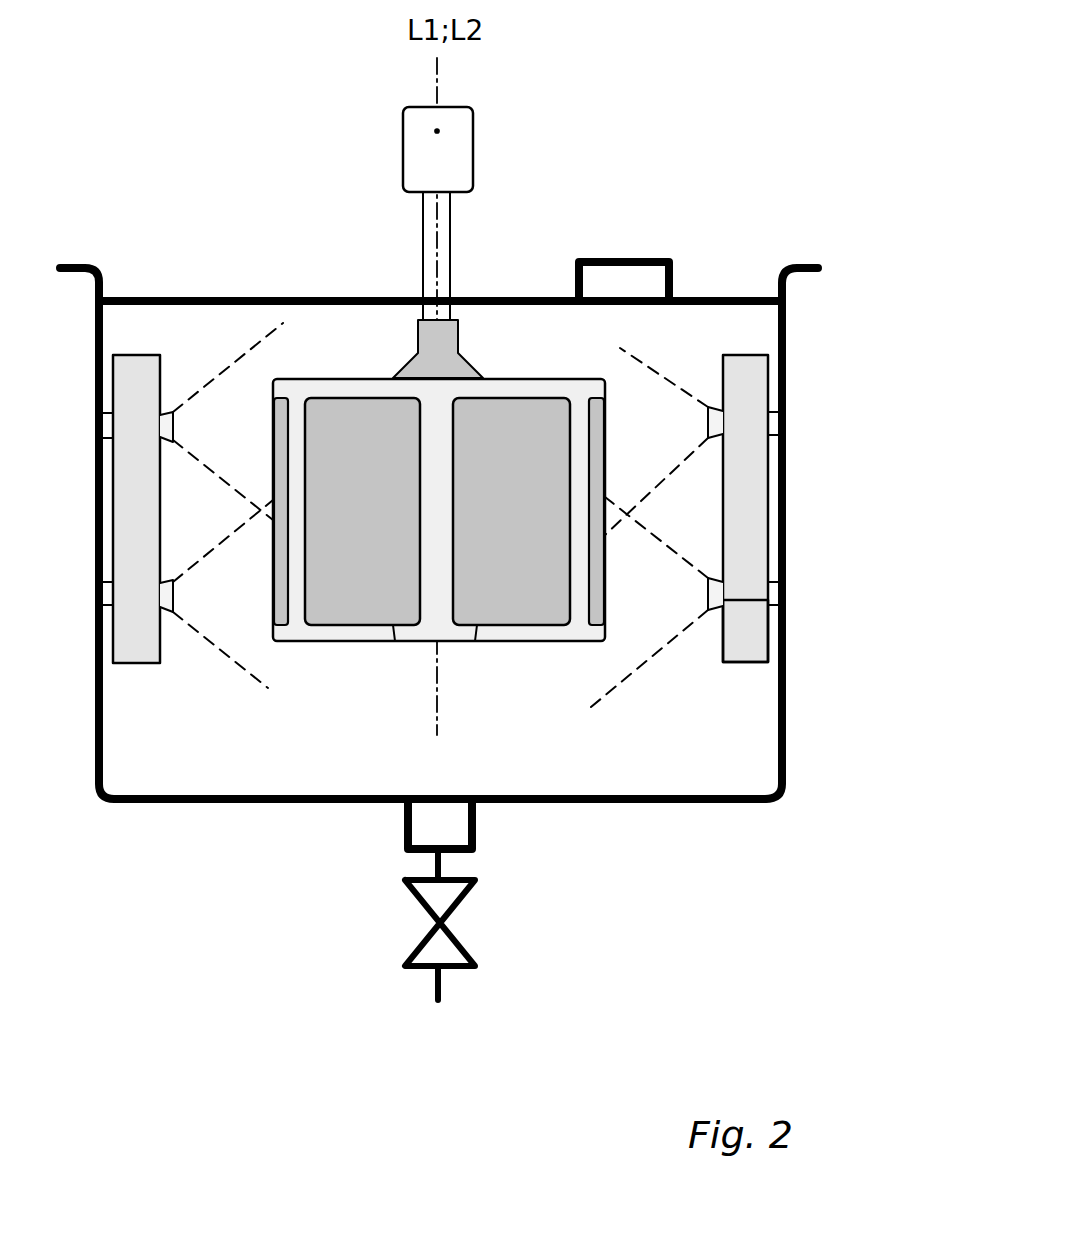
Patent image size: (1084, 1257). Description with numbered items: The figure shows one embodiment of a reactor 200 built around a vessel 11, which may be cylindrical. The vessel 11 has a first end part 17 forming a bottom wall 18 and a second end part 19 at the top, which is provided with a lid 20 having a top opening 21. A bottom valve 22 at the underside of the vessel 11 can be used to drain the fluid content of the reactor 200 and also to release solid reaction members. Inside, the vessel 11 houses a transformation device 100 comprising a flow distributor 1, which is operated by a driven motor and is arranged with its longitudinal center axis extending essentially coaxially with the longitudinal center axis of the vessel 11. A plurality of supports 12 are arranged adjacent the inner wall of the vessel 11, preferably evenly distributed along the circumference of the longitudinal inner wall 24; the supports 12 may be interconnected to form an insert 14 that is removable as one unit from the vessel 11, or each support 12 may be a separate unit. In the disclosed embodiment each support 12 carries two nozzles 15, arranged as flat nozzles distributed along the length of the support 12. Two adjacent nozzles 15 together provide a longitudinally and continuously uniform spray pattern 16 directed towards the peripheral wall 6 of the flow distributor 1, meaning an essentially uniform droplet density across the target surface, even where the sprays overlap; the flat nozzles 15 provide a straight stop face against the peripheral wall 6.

The transformation device 100 is at (560, 404).
The flow distributor 1 is at (357, 382).
The peripheral wall 6 is at (605, 432).
The lid 20 is at (507, 302).
The top opening 21 is at (651, 258).
The reactor 200 is at (757, 247).
The second end part 19 is at (785, 387).
The vessel 11 is at (785, 452).
The longitudinal inner wall 24 is at (785, 514).
The spray pattern 16 is at (682, 578).
The nozzles 15 is at (720, 590).
The supports 12 is at (757, 623).
The insert 14 is at (753, 648).
The first end part 17 is at (785, 775).
The bottom wall 18 is at (717, 807).
The bottom valve 22 is at (470, 953).